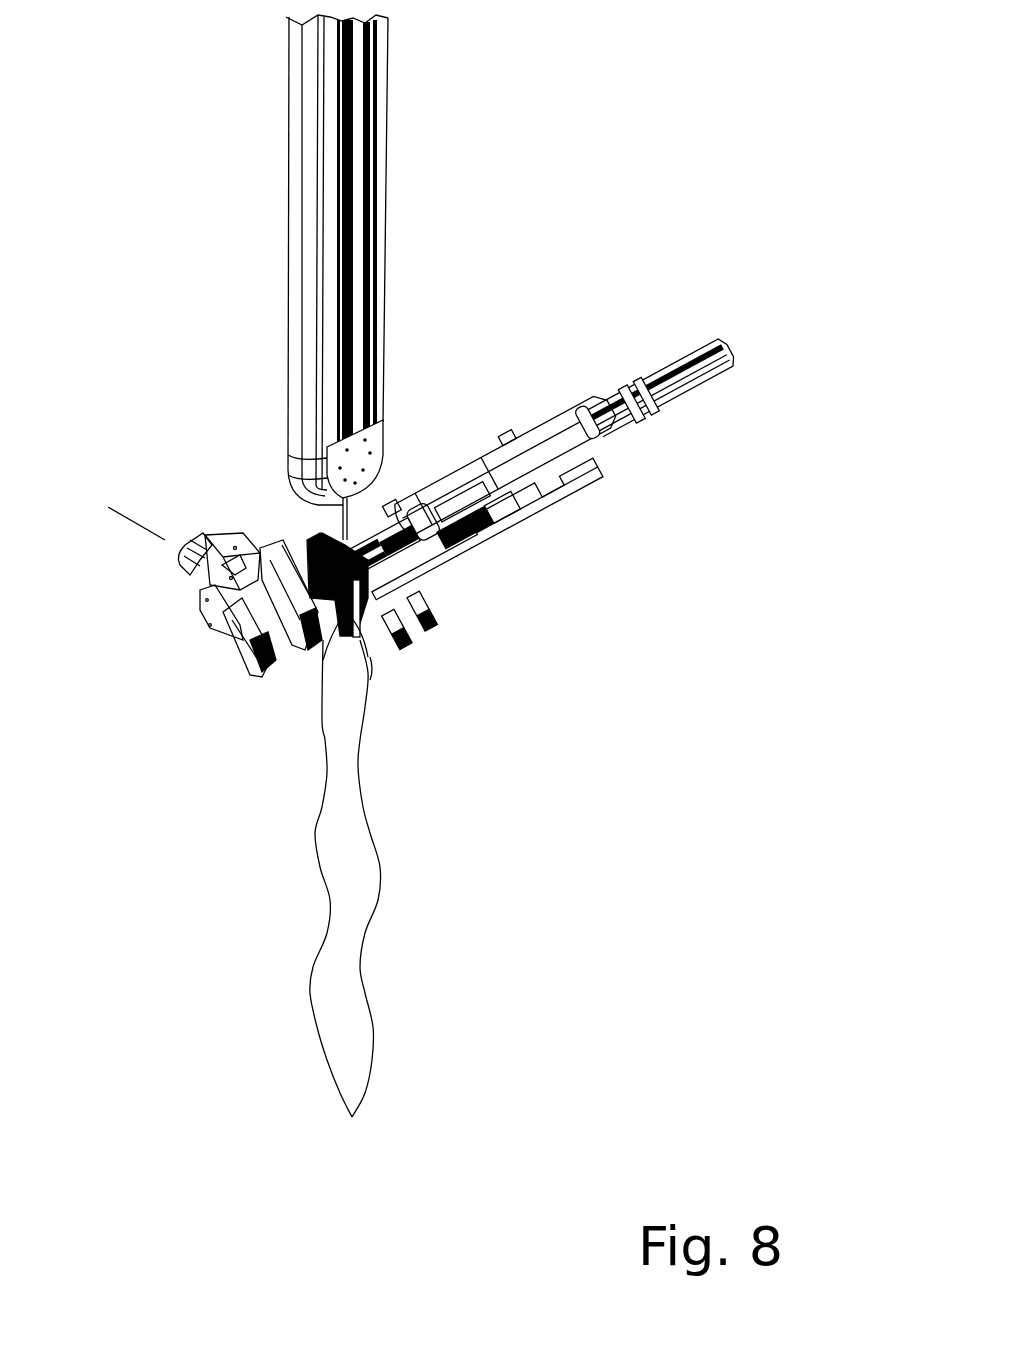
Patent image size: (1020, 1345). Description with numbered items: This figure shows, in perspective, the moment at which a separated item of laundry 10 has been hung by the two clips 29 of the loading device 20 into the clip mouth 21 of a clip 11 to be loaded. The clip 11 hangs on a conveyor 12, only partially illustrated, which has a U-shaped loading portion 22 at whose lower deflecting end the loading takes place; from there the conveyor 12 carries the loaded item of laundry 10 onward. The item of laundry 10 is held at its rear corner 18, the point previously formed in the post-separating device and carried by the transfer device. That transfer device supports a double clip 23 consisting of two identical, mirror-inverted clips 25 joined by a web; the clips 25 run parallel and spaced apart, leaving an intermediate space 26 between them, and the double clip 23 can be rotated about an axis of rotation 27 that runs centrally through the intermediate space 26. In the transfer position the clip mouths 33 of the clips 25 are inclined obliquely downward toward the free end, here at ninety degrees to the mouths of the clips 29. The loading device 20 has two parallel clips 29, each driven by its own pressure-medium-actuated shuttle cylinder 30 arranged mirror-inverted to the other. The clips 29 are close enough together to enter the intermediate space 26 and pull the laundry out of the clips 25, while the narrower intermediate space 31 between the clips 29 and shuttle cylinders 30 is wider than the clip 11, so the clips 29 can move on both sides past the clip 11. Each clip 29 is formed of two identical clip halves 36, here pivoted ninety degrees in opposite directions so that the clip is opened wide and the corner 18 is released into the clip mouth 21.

The item of laundry 10 is at (350, 1037).
The clip 11 is at (318, 533).
The conveyor 12 is at (428, 95).
The rear corner 18 is at (368, 657).
The loading device 20 is at (560, 357).
The clip mouth 21 is at (345, 640).
The U-shaped loading portion 22 is at (363, 402).
The double clip 23 is at (195, 623).
The clip 25 is at (237, 647).
The intermediate space 26 is at (250, 565).
The axis of rotation 27 is at (140, 522).
The clip 29 is at (425, 648).
The shuttle cylinder 30 is at (468, 497).
The intermediate space 31 is at (433, 658).
The clip mouth 33 is at (253, 665).
The clip half 36 is at (433, 620).